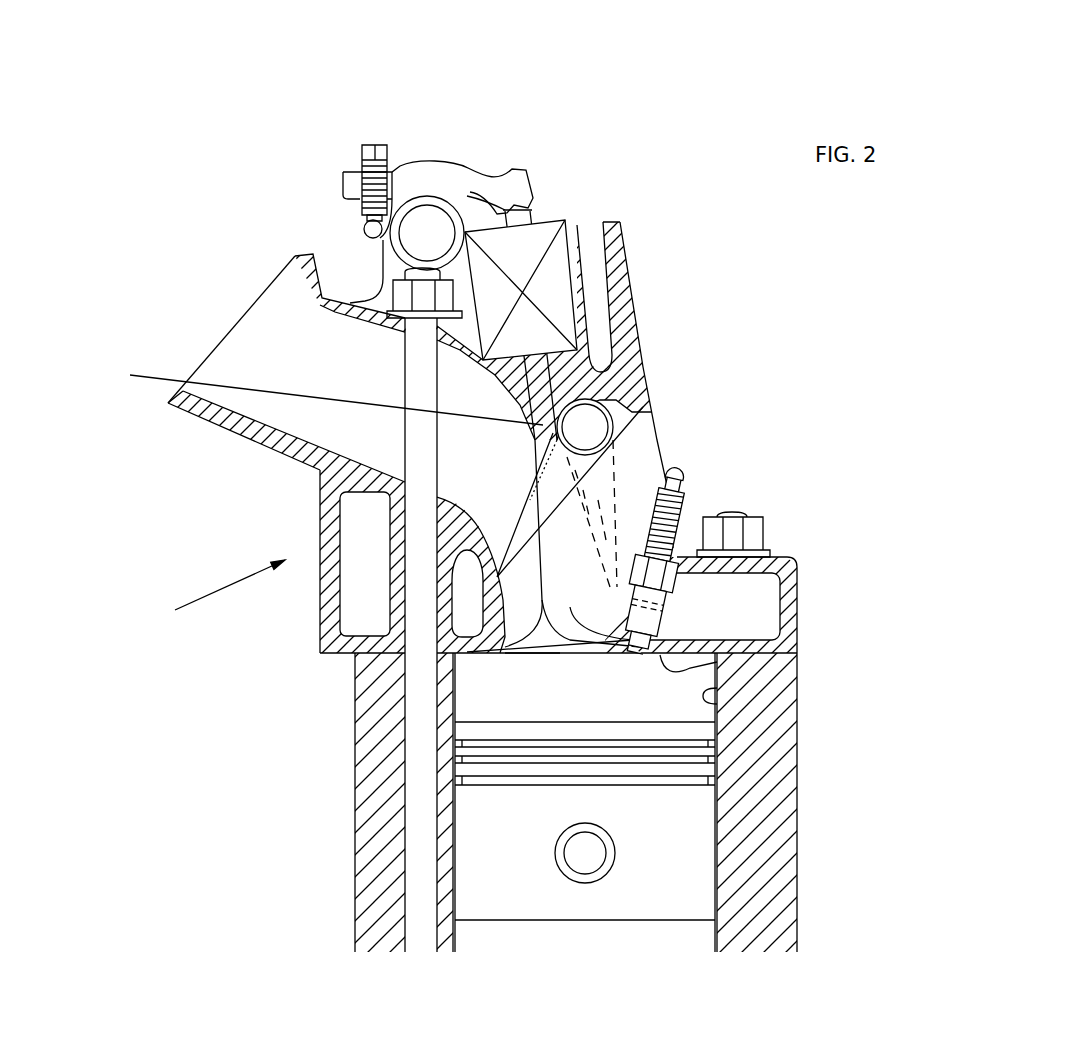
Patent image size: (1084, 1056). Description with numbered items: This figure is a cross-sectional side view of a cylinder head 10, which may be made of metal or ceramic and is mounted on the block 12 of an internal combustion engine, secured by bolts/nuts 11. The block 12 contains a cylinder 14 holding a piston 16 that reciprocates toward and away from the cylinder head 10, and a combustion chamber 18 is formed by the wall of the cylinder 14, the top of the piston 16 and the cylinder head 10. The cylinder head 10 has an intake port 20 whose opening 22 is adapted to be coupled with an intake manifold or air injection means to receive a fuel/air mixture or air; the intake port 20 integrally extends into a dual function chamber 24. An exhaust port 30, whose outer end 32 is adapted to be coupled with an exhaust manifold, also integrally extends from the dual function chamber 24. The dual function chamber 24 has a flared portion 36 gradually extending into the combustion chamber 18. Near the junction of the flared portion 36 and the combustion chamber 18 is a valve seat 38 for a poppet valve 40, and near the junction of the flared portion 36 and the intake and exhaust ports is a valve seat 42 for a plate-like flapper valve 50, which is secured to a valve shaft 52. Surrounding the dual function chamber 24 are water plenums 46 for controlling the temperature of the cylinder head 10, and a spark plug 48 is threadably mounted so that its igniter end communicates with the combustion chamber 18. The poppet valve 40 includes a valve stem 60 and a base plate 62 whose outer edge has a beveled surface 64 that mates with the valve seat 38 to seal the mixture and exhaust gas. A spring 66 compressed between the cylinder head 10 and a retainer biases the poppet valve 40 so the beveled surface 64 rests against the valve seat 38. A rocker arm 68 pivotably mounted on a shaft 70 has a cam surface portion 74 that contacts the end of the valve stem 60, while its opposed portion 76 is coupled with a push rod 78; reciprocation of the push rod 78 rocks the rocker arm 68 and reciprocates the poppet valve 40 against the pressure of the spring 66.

The cylinder head 10 is at (213, 596).
The bolts/nuts 11 is at (415, 735).
The block 12 is at (372, 857).
The cylinder 14 is at (708, 698).
The piston 16 is at (676, 838).
The combustion chamber 18 is at (650, 700).
The intake port 20 is at (312, 370).
The opening 22 is at (195, 365).
The dual function chamber 24 is at (523, 595).
The exhaust port 30 is at (623, 450).
The outer end 32 is at (657, 443).
The flared portion 36 is at (700, 665).
The valve seat 38 is at (355, 652).
The poppet valve 40 is at (550, 560).
The valve seat 42 is at (500, 530).
The water plenum 46 is at (360, 573).
The spark plug 48 is at (687, 483).
The flapper valve 50 is at (522, 503).
The valve shaft 52 is at (598, 440).
The valve stem 60 is at (317, 392).
The base plate 62 is at (552, 632).
The beveled surface 64 is at (577, 650).
The spring 66 is at (568, 232).
The rocker arm 68 is at (448, 182).
The shaft 70 is at (440, 246).
The cam surface portion 74 is at (547, 212).
The opposed portion 76 is at (353, 180).
The push rod 78 is at (363, 207).